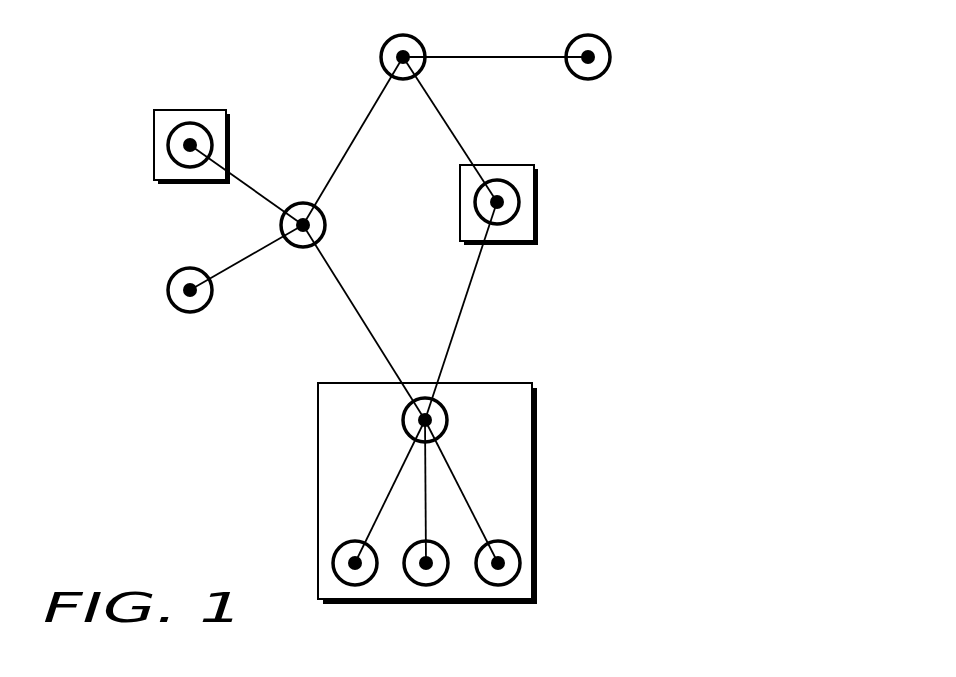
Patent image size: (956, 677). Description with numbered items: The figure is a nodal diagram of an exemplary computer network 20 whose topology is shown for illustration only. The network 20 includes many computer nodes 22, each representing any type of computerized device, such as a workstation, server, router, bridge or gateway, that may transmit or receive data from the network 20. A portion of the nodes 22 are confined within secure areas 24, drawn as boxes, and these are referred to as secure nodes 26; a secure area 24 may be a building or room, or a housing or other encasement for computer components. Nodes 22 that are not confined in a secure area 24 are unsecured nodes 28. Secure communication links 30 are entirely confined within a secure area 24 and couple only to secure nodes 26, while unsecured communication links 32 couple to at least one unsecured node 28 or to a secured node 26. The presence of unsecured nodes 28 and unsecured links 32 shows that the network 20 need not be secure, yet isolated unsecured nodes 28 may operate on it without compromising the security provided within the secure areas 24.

The computer network 20 is at (207, 493).
The computer node 22 is at (168, 148).
The secure area 24 is at (214, 110).
The secure node 26 is at (190, 122).
The unsecured node 28 is at (390, 45).
The secure communication link 30 is at (393, 486).
The unsecured communication link 32 is at (240, 182).